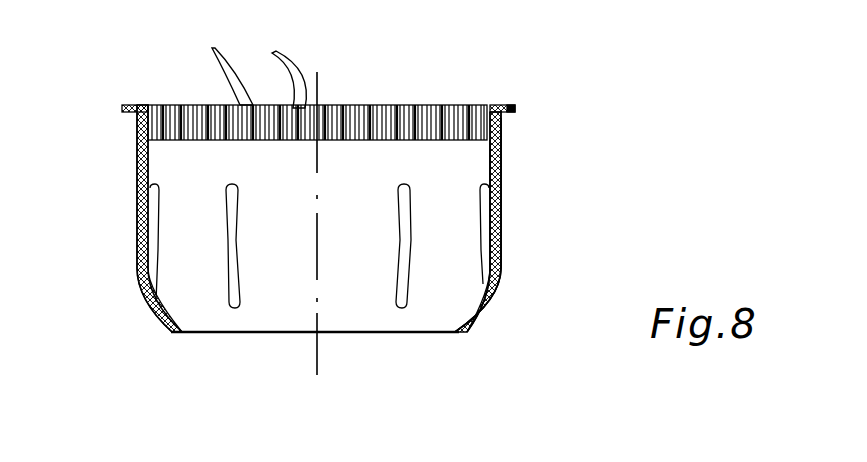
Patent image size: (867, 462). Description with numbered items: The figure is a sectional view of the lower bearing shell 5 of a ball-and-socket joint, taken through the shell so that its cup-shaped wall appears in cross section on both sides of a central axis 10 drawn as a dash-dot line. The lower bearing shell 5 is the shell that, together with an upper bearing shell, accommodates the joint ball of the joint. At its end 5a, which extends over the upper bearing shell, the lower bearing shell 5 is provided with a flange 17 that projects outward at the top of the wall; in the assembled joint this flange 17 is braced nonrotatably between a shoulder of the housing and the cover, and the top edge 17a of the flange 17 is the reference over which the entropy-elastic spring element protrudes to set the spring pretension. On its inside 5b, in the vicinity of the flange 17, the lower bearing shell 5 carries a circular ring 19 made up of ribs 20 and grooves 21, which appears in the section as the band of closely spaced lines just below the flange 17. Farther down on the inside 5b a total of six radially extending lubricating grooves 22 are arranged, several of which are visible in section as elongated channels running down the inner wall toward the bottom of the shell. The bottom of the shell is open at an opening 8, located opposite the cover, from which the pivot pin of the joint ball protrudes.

The lower bearing shell 5 is at (126, 309).
The end of the lower bearing shell 5a is at (501, 118).
The inside of the lower bearing shell 5b is at (488, 224).
The opening 8 is at (188, 323).
The central axis 10 is at (318, 87).
The flange 17 is at (515, 109).
The top edge of the flange 17a is at (507, 103).
The circular ring 19 is at (468, 108).
The ribs 20 is at (212, 67).
The grooves 21 is at (284, 68).
The lubricating grooves 22 is at (395, 305).